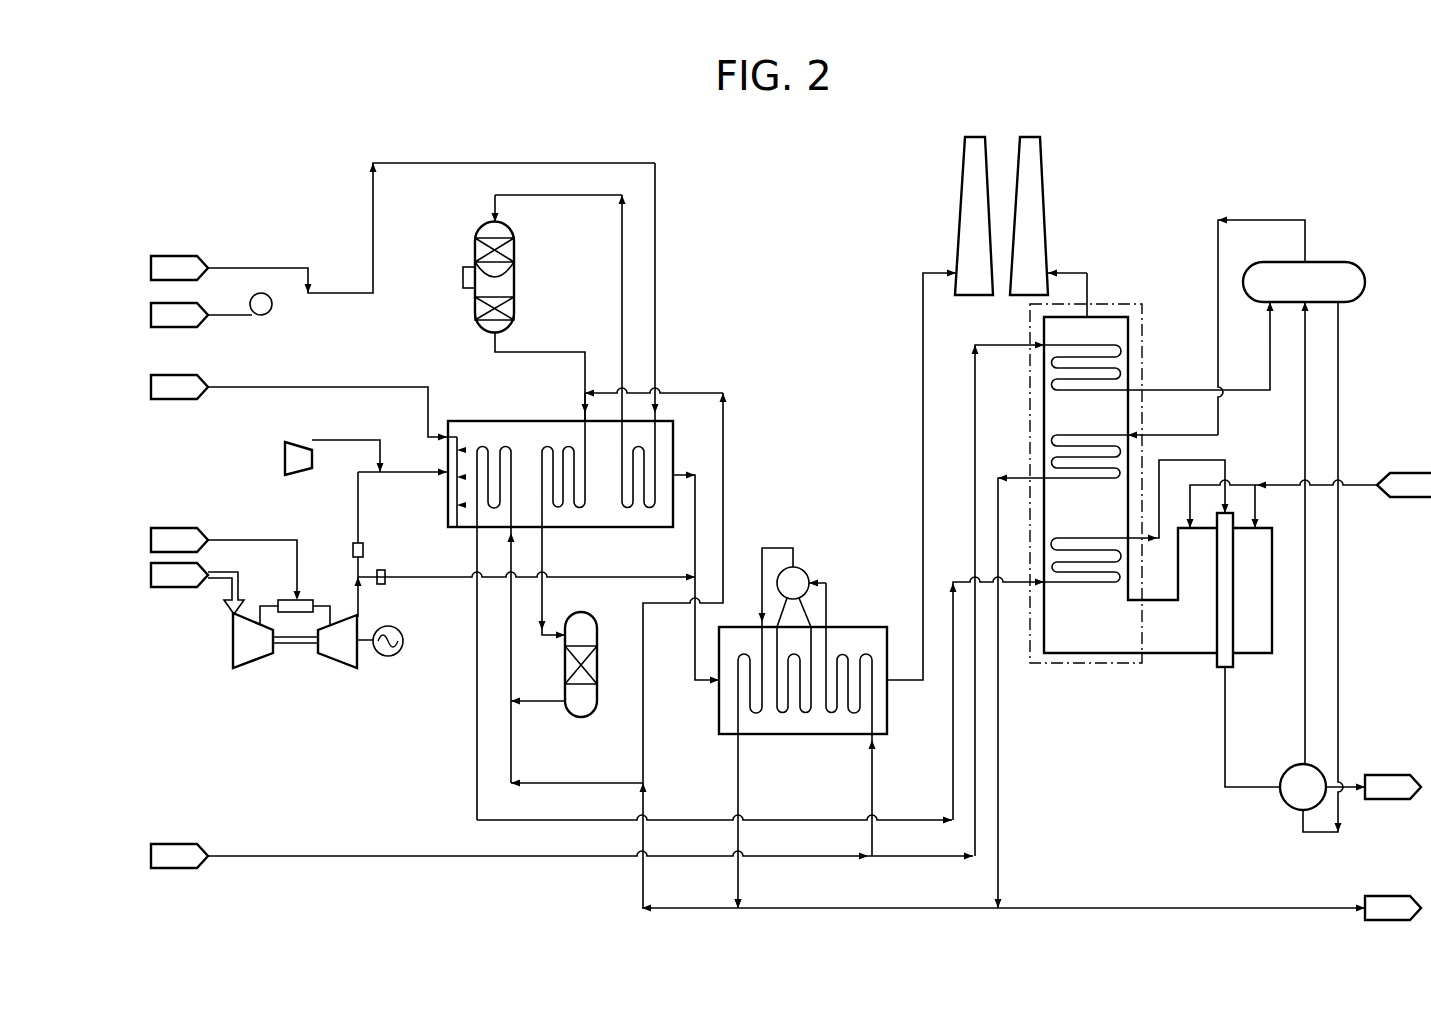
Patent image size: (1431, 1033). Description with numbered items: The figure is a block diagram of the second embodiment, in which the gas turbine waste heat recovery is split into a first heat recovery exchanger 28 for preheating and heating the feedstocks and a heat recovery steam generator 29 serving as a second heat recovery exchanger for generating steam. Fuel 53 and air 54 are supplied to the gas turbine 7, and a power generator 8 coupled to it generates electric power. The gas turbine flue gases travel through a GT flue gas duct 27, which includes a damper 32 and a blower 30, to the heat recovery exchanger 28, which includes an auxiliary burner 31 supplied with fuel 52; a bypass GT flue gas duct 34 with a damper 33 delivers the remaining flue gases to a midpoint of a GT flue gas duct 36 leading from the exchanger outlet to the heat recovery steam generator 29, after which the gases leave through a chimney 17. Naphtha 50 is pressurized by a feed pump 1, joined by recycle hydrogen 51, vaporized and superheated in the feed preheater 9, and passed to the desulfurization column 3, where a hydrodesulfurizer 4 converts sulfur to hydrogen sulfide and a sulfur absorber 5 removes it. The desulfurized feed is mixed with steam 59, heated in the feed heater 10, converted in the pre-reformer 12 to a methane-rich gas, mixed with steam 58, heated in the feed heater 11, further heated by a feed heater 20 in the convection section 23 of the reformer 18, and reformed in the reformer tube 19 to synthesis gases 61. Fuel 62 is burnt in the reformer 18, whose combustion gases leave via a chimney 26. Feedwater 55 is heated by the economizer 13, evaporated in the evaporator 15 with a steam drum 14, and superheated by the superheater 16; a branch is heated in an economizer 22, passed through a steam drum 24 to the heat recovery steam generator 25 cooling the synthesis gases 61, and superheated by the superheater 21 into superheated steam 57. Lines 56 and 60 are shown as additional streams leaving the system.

The feed pump 1 is at (263, 316).
The desulfurization column 3 is at (515, 285).
The hydrodesulfurizer 4 is at (475, 255).
The sulfur absorber 5 is at (475, 310).
The gas turbine 7 is at (294, 650).
The power generator 8 is at (388, 657).
The feed preheater 9 is at (633, 507).
The feed heater 10 is at (545, 445).
The feed heater 11 is at (503, 445).
The pre-reformer 12 is at (583, 718).
The economizer 13 is at (832, 713).
The steam drum 14 is at (806, 568).
The evaporator 15 is at (800, 713).
The superheater 16 is at (756, 713).
The chimney 17 is at (957, 210).
The reformer 18 is at (1175, 655).
The reformer tube 19 is at (1237, 668).
The feed heater 20 is at (1080, 585).
The superheater 21 is at (1077, 480).
The economizer 22 is at (1120, 375).
The convection section 23 is at (1082, 665).
The steam drum 24 is at (1340, 262).
The heat recovery steam generator 25 is at (1288, 803).
The chimney 26 is at (1046, 212).
The GT flue gas duct 27 is at (360, 497).
The heat recovery exchanger 28 is at (470, 420).
The heat recovery steam generator 29 is at (862, 626).
The blower 30 is at (284, 446).
The auxiliary burner 31 is at (447, 460).
The damper 32 is at (352, 548).
The damper 33 is at (381, 568).
The GT flue gas duct 34 is at (440, 577).
The GT flue gas duct 36 is at (695, 555).
The naphtha 50 is at (149, 315).
The recycle hydrogen 51 is at (149, 268).
The fuel 52 is at (149, 387).
The fuel 53 is at (149, 540).
The air 54 is at (149, 575).
The feedwater 55 is at (149, 856).
The condensate line 56 is at (740, 886).
The superheated steam 57 is at (996, 888).
The steam 58 is at (512, 745).
The steam 59 is at (725, 448).
The condensate outlet 60 is at (1388, 897).
The synthesis gases 61 is at (1388, 775).
The fuel 62 is at (1408, 474).